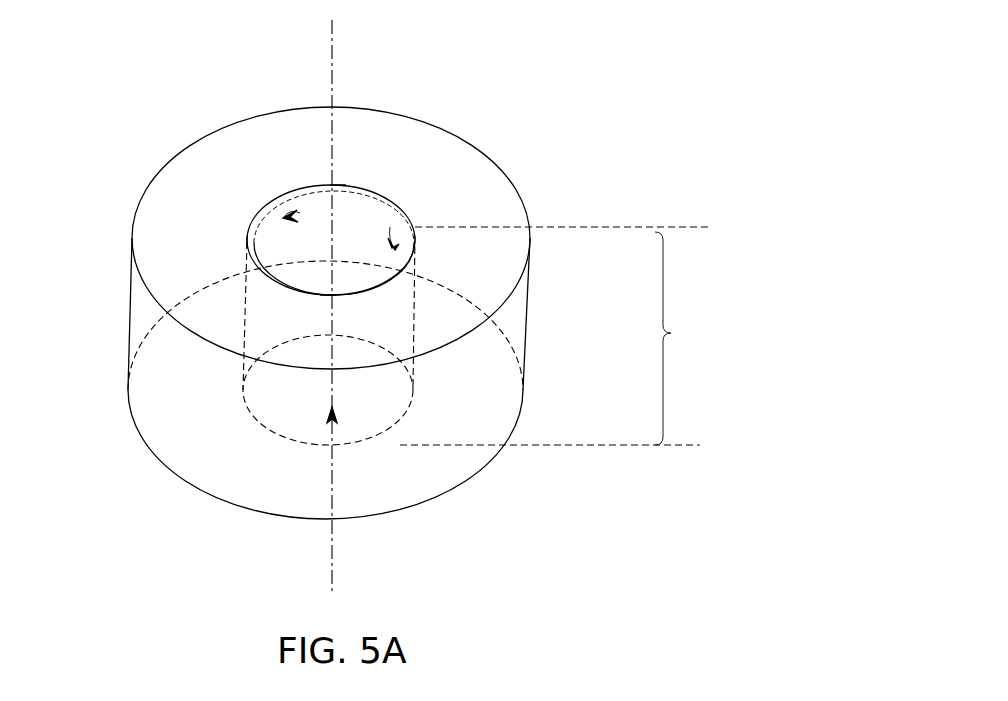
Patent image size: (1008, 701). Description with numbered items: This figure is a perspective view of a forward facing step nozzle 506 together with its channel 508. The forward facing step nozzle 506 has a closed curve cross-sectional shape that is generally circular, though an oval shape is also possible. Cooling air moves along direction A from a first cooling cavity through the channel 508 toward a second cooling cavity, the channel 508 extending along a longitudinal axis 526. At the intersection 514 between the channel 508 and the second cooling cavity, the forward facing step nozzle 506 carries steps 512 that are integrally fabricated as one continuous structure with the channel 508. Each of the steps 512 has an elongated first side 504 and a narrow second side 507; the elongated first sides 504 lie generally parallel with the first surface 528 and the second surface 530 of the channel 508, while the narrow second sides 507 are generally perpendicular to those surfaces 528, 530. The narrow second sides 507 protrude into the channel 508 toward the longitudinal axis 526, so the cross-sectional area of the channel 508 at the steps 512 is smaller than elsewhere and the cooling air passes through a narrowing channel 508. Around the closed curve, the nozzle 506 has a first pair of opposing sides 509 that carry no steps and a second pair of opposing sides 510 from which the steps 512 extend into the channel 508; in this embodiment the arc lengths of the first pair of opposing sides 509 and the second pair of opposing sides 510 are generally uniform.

The elongated first sides 504 is at (313, 187).
The forward facing step nozzle 506 is at (393, 217).
The narrow second sides 507 is at (350, 184).
The channel 508 is at (671, 333).
The first pair of opposing sides 509 is at (385, 190).
The second pair of opposing sides 510 is at (300, 190).
The steps 512 is at (252, 210).
The intersection 514 is at (245, 237).
The longitudinal axis 526 is at (334, 32).
The first surface 528 is at (362, 267).
The second surface 530 is at (282, 200).